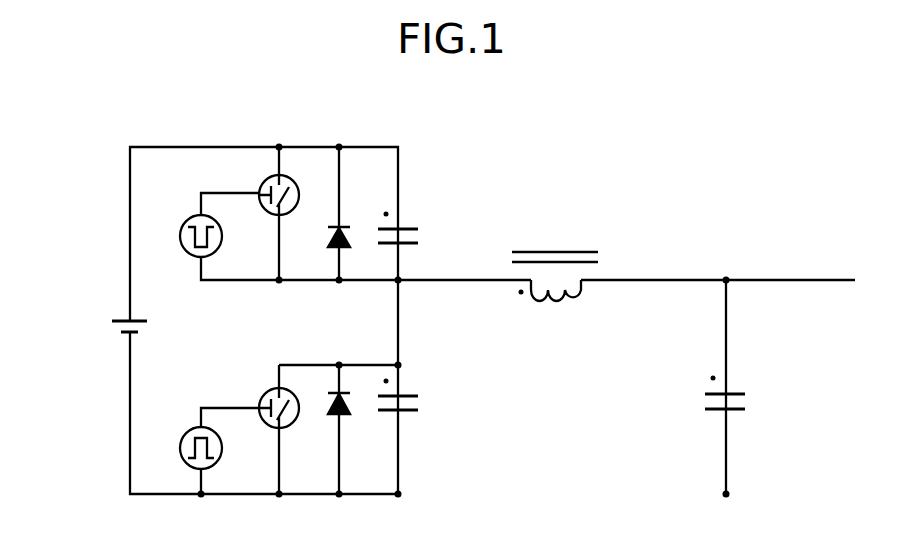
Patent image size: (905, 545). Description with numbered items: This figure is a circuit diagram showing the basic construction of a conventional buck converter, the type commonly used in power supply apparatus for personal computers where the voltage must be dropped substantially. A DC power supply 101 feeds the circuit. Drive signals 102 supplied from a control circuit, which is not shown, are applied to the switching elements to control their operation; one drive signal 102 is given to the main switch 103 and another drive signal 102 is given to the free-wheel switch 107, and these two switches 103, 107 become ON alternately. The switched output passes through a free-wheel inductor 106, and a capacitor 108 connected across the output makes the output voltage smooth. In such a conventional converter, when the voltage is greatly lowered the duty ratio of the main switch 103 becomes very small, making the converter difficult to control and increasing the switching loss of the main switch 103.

The DC power supply 101 is at (113, 329).
The drive signal 102 is at (192, 220).
The main switch 103 is at (260, 183).
The free-wheel inductor 106 is at (552, 300).
The free-wheel switch 107 is at (260, 395).
The capacitor 108 is at (748, 402).